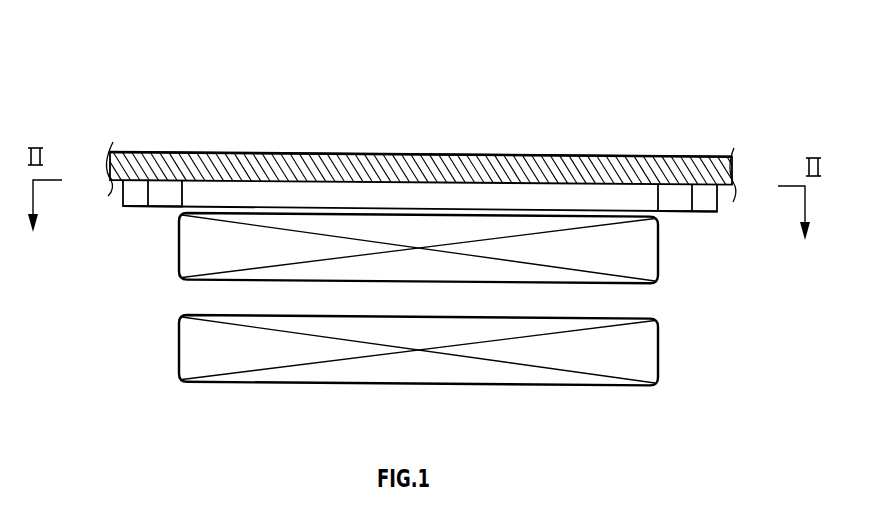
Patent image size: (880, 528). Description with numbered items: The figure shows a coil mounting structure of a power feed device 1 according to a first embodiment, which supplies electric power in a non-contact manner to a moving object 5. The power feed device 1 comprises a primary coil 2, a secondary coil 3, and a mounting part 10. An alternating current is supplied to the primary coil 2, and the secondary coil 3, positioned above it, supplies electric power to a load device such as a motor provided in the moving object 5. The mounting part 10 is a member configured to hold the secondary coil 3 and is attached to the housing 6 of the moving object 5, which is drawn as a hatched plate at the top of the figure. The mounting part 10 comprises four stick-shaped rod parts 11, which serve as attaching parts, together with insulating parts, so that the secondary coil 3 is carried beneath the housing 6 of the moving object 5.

The power feed device 1 is at (146, 76).
The primary coil 2 is at (658, 348).
The secondary coil 3 is at (658, 250).
The moving object 5 is at (659, 132).
The housing 6 is at (548, 154).
The mounting part 10 is at (130, 232).
The rod parts 11 is at (717, 210).